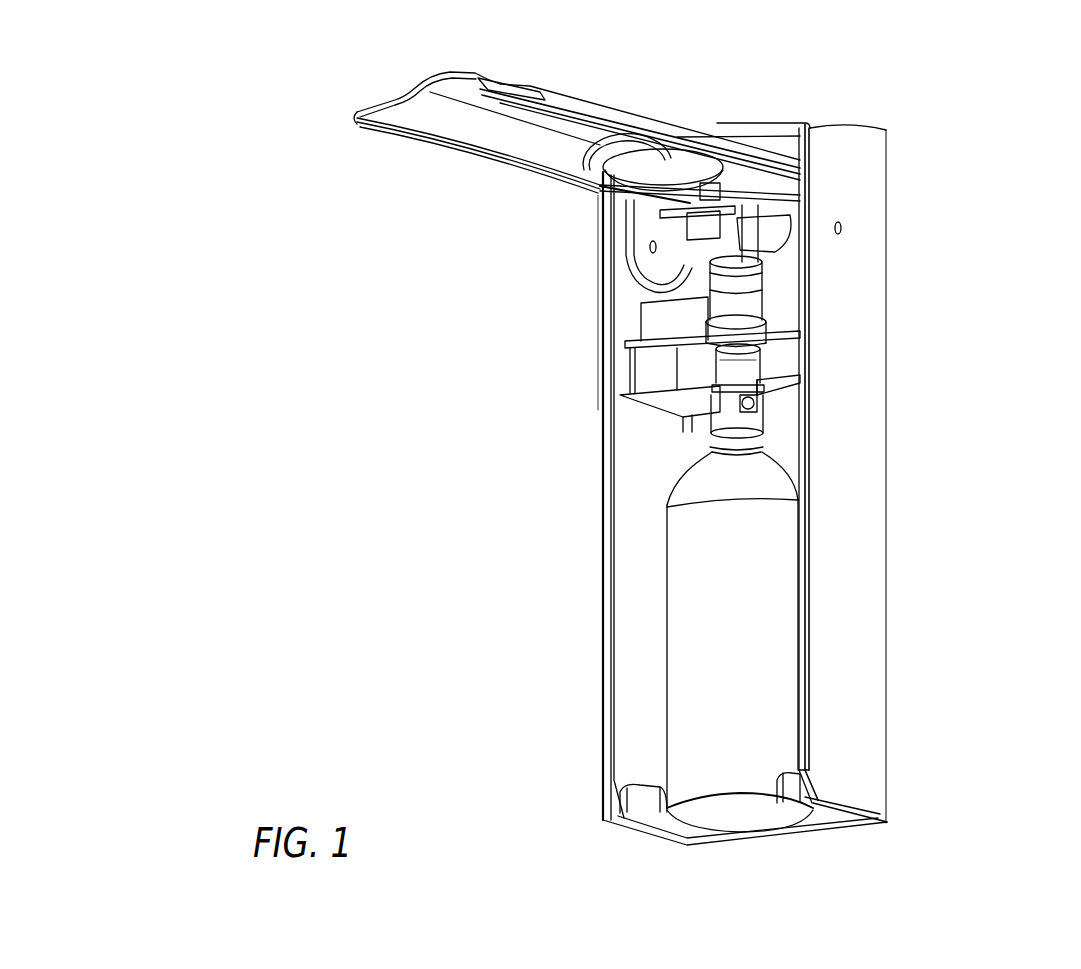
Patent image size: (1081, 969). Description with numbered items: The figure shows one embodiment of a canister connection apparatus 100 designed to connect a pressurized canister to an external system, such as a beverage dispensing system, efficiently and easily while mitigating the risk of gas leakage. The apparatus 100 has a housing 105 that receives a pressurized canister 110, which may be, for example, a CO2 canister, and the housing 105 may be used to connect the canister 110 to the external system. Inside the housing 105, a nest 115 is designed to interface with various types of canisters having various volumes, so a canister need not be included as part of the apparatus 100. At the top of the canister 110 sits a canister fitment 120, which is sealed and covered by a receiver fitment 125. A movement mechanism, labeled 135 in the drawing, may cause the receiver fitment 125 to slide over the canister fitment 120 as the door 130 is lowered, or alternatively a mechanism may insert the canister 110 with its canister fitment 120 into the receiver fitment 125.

The canister connection apparatus 100 is at (1063, 74).
The housing 105 is at (866, 138).
The pressurized canister 110 is at (712, 606).
The nest 115 is at (638, 375).
The canister fitment 120 is at (742, 365).
The receiver fitment 125 is at (742, 299).
The door 130 is at (493, 137).
The actuator hinge 135 is at (708, 250).